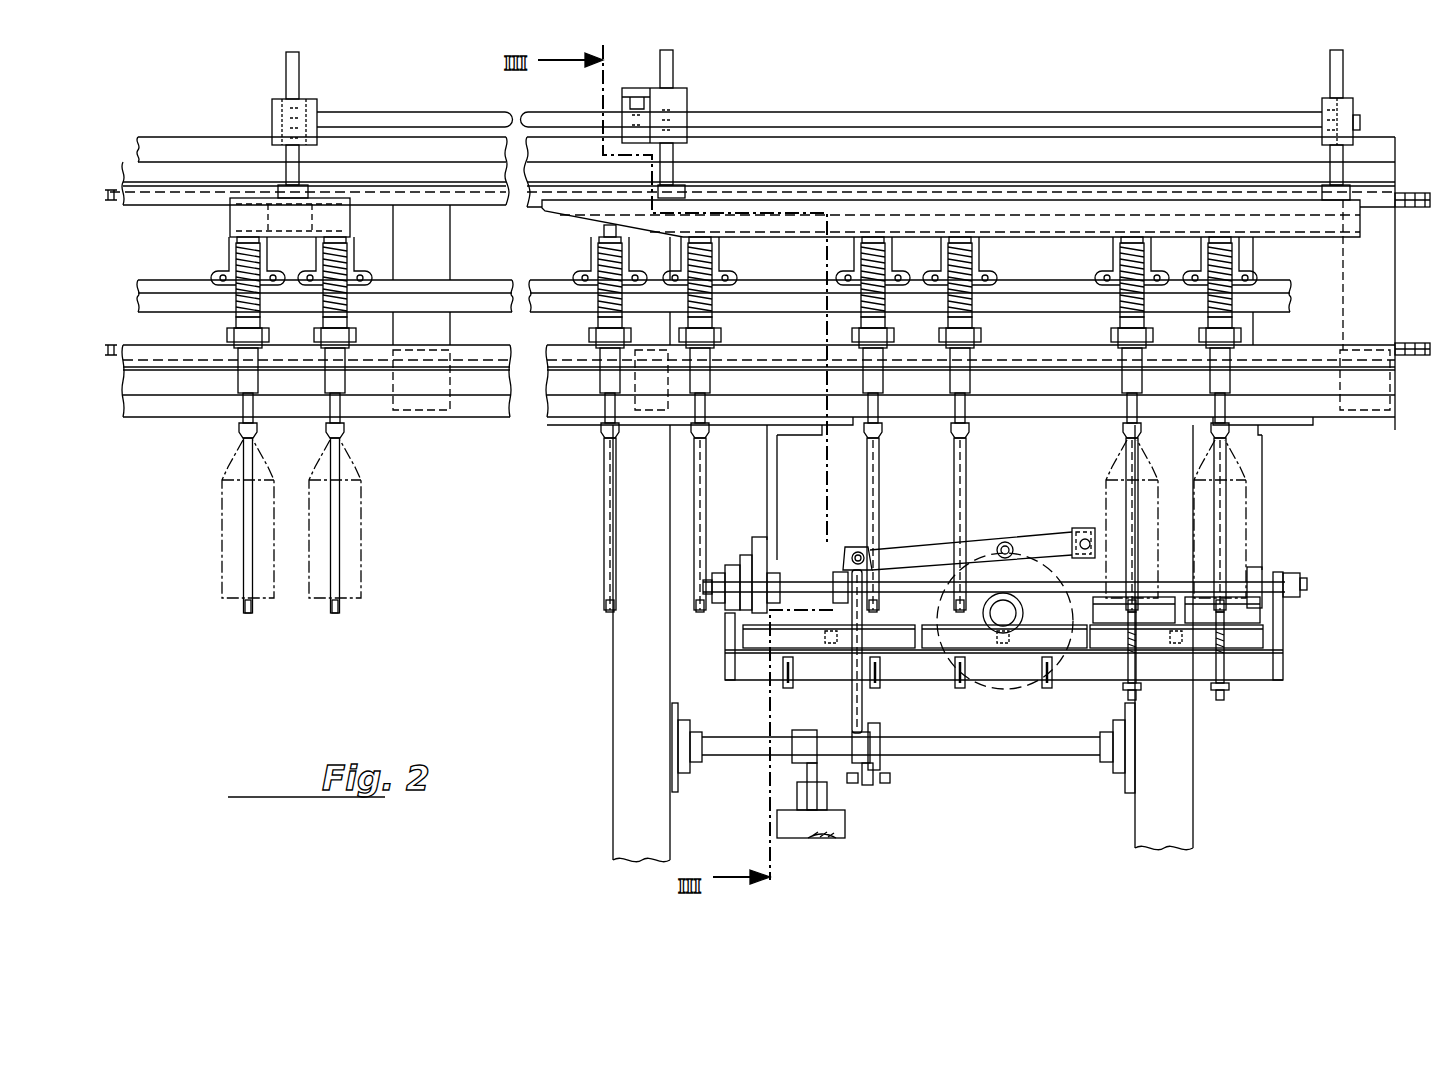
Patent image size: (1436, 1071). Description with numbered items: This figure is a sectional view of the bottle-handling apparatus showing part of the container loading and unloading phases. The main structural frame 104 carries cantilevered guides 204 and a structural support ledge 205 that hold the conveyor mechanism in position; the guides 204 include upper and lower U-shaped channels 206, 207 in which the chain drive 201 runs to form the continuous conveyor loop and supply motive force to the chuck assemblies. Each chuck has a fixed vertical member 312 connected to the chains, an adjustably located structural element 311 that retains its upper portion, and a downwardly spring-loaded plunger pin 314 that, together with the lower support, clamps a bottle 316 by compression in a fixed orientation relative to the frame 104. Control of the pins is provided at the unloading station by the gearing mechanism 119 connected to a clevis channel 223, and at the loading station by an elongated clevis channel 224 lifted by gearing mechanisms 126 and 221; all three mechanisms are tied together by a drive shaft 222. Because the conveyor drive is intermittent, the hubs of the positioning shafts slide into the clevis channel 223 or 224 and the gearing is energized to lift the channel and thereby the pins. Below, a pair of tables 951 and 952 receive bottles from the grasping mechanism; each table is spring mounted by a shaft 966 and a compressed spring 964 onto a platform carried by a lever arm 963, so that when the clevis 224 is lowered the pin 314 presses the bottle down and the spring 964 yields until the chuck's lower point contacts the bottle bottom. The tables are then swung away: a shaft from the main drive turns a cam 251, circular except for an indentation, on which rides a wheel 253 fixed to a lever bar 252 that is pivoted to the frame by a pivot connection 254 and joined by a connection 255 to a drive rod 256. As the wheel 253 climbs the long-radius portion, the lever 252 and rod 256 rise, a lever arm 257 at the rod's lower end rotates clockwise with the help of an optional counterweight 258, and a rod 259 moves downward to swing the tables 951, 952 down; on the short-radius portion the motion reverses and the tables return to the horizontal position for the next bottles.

The main structural frame 104 is at (204, 143).
The gearing mechanism 119 is at (312, 100).
The gearing mechanism 126 is at (682, 107).
The chain drive 201 is at (1420, 213).
The cantilevered guides 204 is at (240, 160).
The structural support ledge 205 is at (545, 288).
The U-shaped channel 206 is at (152, 198).
The U-shaped channel 207 is at (183, 350).
The gearing mechanism 221 is at (1322, 100).
The drive shaft 222 is at (445, 118).
The clevis channel 223 is at (245, 212).
The elongated clevis channel 224 is at (1018, 212).
The cam 251 is at (1008, 682).
The lever bar 252 is at (1040, 542).
The wheel 253 is at (1020, 545).
The pivot connection 254 is at (1085, 540).
The connection 255 is at (857, 545).
The drive rod 256 is at (851, 698).
The lever arm 257 is at (815, 772).
The counterweight 258 is at (838, 818).
The rod 259 is at (872, 702).
The structural element 311 is at (1225, 330).
The vertical member 312 is at (963, 472).
The plunger pin 314 is at (952, 433).
The bottle 316 is at (1238, 513).
The table 951 is at (1243, 662).
The table 952 is at (1178, 624).
The lever arm 963 is at (732, 632).
The compressed spring 964 is at (800, 585).
The shaft 966 is at (1130, 630).